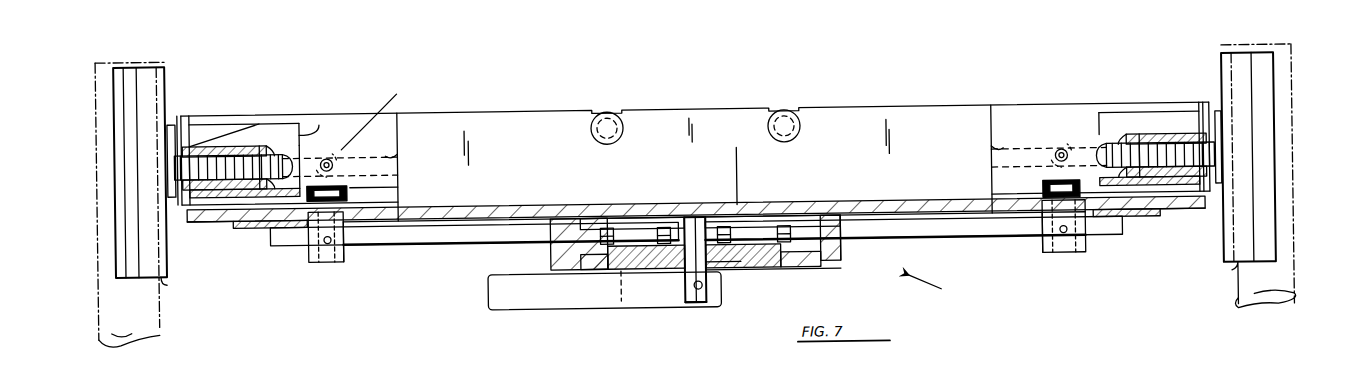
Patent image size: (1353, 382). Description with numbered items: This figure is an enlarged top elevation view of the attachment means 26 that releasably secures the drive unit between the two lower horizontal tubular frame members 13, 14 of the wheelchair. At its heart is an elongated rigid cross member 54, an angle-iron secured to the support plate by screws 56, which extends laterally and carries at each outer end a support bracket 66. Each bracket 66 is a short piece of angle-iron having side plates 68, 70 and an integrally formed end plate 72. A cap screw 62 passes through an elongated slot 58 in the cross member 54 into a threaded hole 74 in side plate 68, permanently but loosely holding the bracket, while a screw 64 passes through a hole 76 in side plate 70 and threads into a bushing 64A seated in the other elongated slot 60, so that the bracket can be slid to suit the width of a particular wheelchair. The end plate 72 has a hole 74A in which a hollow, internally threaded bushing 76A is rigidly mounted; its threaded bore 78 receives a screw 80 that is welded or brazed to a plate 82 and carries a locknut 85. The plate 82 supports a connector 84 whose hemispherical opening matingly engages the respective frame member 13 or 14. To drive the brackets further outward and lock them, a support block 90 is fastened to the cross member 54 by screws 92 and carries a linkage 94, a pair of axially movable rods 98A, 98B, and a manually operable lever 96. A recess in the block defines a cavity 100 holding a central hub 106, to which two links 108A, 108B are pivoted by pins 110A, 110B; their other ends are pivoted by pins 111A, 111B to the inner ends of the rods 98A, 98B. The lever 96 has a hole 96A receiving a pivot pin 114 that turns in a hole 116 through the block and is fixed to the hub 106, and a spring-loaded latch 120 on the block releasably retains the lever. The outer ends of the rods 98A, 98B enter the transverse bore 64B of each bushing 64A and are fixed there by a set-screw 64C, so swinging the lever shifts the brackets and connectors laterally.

The lower horizontal tubular frame member 13 is at (160, 300).
The lower horizontal tubular frame member 14 is at (1236, 303).
The attachment means 26 is at (933, 289).
The cross member 54 is at (920, 109).
The screws 56 is at (612, 112).
The elongated slot 58 is at (400, 134).
The elongated slot 60 is at (268, 220).
The cap screw 62 is at (329, 154).
The cap screw 64 is at (308, 188).
The bushing 64A is at (310, 250).
The bore 64B is at (346, 240).
The set-screw 64C is at (324, 250).
The support bracket 66 is at (190, 206).
The side plate 68 is at (375, 113).
The side plate 70 is at (401, 194).
The end plate 72 is at (192, 130).
The threaded hole 74 is at (334, 158).
The hole 74A is at (230, 139).
The hole 76 is at (392, 180).
The bushing 76A is at (245, 141).
The threaded bore 78 is at (262, 143).
The screw 80 is at (292, 148).
The plate 82 is at (176, 118).
The connector 84 is at (166, 278).
The locknut 85 is at (265, 143).
The support block 90 is at (842, 246).
The screws 92 is at (570, 258).
The linkage 94 is at (736, 167).
The lever 96 is at (708, 298).
The hole 96A is at (690, 302).
The rod 98A is at (366, 242).
The rod 98B is at (914, 244).
The cavity 100 is at (720, 262).
The central hub 106 is at (690, 212).
The link 108A is at (640, 214).
The link 108B is at (770, 214).
The pin 110A is at (663, 226).
The pin 110B is at (752, 226).
The pin 111A is at (606, 226).
The pin 111B is at (802, 226).
The pivot pin 114 is at (702, 302).
The hole 116 is at (708, 272).
The spring-loaded latch 120 is at (620, 301).